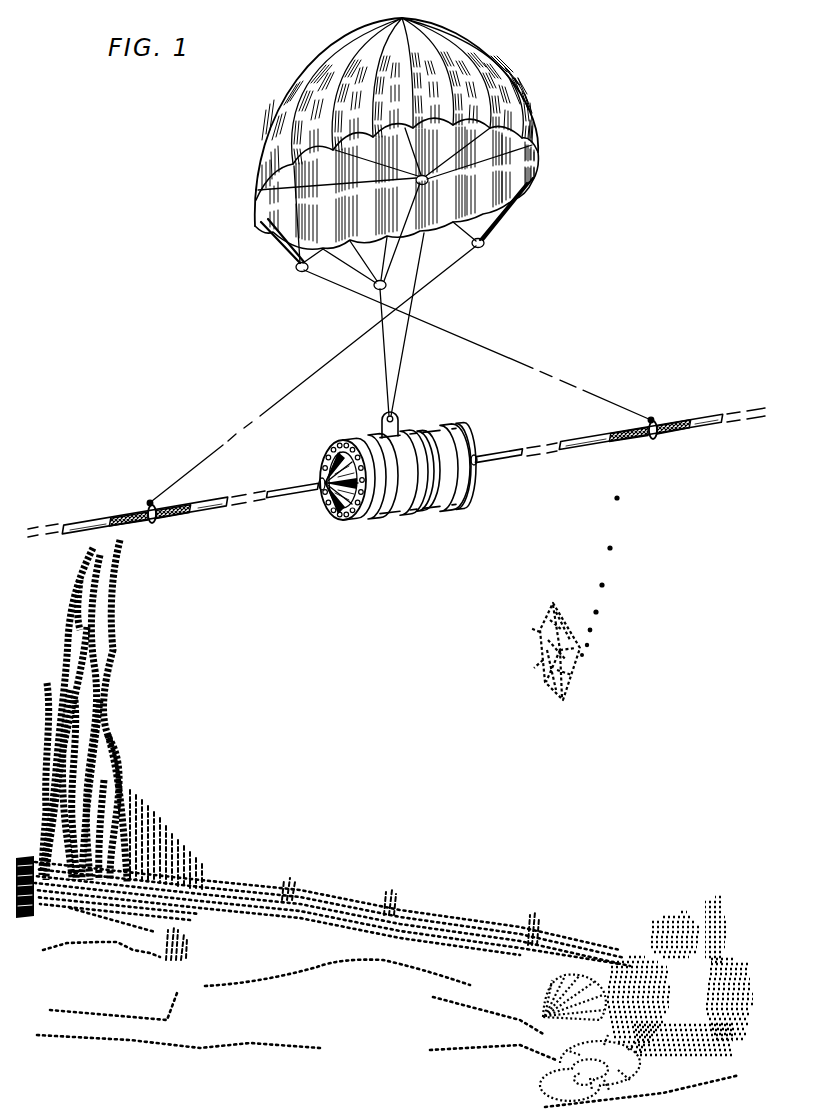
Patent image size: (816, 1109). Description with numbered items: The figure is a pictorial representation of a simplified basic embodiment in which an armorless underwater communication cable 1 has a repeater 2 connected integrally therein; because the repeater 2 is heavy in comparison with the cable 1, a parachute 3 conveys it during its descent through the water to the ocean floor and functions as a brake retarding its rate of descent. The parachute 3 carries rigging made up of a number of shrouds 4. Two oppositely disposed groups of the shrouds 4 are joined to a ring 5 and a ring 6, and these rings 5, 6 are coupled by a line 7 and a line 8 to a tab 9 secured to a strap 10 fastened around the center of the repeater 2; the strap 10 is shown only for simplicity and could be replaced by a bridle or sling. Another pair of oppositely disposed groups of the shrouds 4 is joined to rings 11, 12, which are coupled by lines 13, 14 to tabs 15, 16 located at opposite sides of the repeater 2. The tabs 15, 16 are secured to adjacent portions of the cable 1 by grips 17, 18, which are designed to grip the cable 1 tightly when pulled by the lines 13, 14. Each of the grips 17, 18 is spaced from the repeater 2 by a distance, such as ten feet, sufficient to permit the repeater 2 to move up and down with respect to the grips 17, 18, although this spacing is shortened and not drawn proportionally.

The underwater communication cable 1 is at (80, 519).
The repeater 2 is at (437, 507).
The parachute 3 is at (498, 86).
The shrouds 4 is at (271, 249).
The ring 5 is at (375, 289).
The ring 6 is at (428, 182).
The line 7 is at (387, 383).
The line 8 is at (400, 380).
The tab 9 is at (396, 421).
The strap 10 is at (409, 515).
The ring 11 is at (299, 272).
The ring 12 is at (482, 248).
The line 13 is at (492, 349).
The line 14 is at (285, 397).
The tab 15 is at (656, 420).
The tab 16 is at (149, 502).
The grip 17 is at (680, 434).
The grip 18 is at (167, 520).